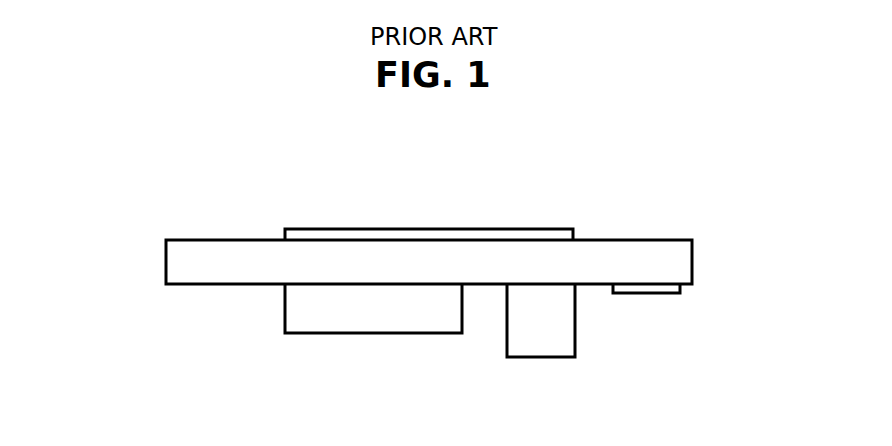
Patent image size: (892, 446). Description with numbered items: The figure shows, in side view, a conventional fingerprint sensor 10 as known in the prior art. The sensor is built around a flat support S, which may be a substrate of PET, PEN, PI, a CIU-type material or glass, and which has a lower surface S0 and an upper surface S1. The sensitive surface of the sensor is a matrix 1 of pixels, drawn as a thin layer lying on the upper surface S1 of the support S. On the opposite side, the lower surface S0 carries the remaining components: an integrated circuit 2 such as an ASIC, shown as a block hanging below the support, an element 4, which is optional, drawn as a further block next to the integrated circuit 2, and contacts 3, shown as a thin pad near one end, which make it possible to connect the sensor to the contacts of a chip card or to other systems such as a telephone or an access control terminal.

The prior art device 10 is at (556, 173).
The matrix of pixels 1 is at (432, 238).
The support S is at (498, 259).
The lower surface S0 is at (190, 263).
The upper surface S1 is at (675, 262).
The integrated circuit 2 is at (375, 307).
The contacts 3 is at (647, 292).
The element 4 is at (540, 331).